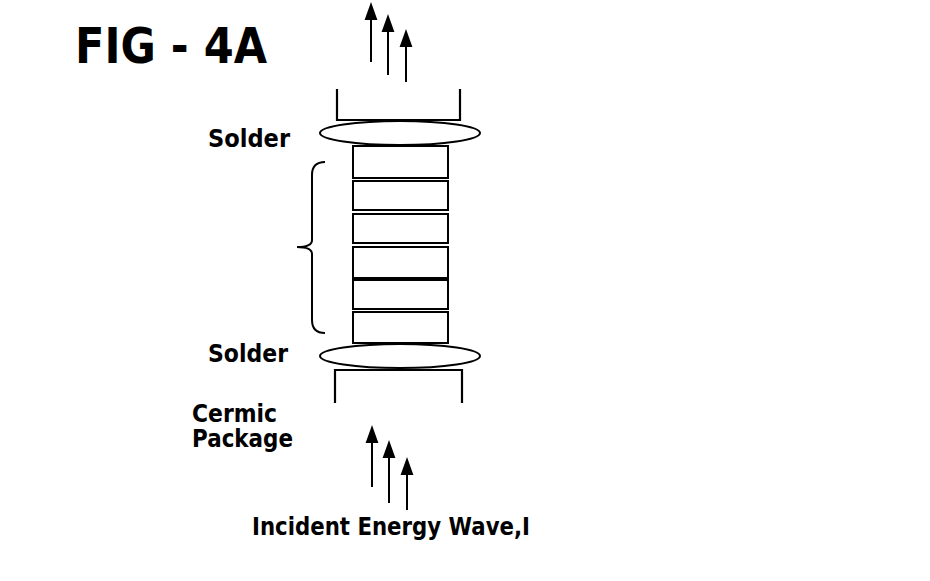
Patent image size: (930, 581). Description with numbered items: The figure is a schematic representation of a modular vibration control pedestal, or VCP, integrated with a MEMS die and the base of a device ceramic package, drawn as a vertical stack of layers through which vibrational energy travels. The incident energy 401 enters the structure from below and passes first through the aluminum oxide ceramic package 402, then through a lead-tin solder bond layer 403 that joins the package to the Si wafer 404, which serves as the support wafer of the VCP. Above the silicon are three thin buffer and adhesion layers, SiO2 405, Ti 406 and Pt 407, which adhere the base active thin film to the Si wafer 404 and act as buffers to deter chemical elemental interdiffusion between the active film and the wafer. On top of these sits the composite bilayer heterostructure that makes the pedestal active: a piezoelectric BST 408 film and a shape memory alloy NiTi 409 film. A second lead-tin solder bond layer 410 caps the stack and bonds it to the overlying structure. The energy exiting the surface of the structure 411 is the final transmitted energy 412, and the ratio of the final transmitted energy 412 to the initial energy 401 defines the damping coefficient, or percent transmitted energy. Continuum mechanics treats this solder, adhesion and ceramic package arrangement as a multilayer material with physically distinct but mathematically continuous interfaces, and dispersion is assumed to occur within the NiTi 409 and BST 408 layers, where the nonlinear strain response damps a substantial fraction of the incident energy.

The energy 401 is at (407, 488).
The ceramic package 402 is at (462, 388).
The lead-tin solder bond layer 403 is at (480, 356).
The Si wafer 404 is at (448, 323).
The SiO2 layer 405 is at (448, 293).
The Ti layer 406 is at (448, 260).
The Pt layer 407 is at (448, 226).
The BST active thin film 408 is at (448, 193).
The NiTi active thin film 409 is at (448, 160).
The lead-tin solder bond layer 410 is at (480, 131).
The surface of the structure 411 is at (460, 98).
The final transmitted energy 412 is at (407, 62).